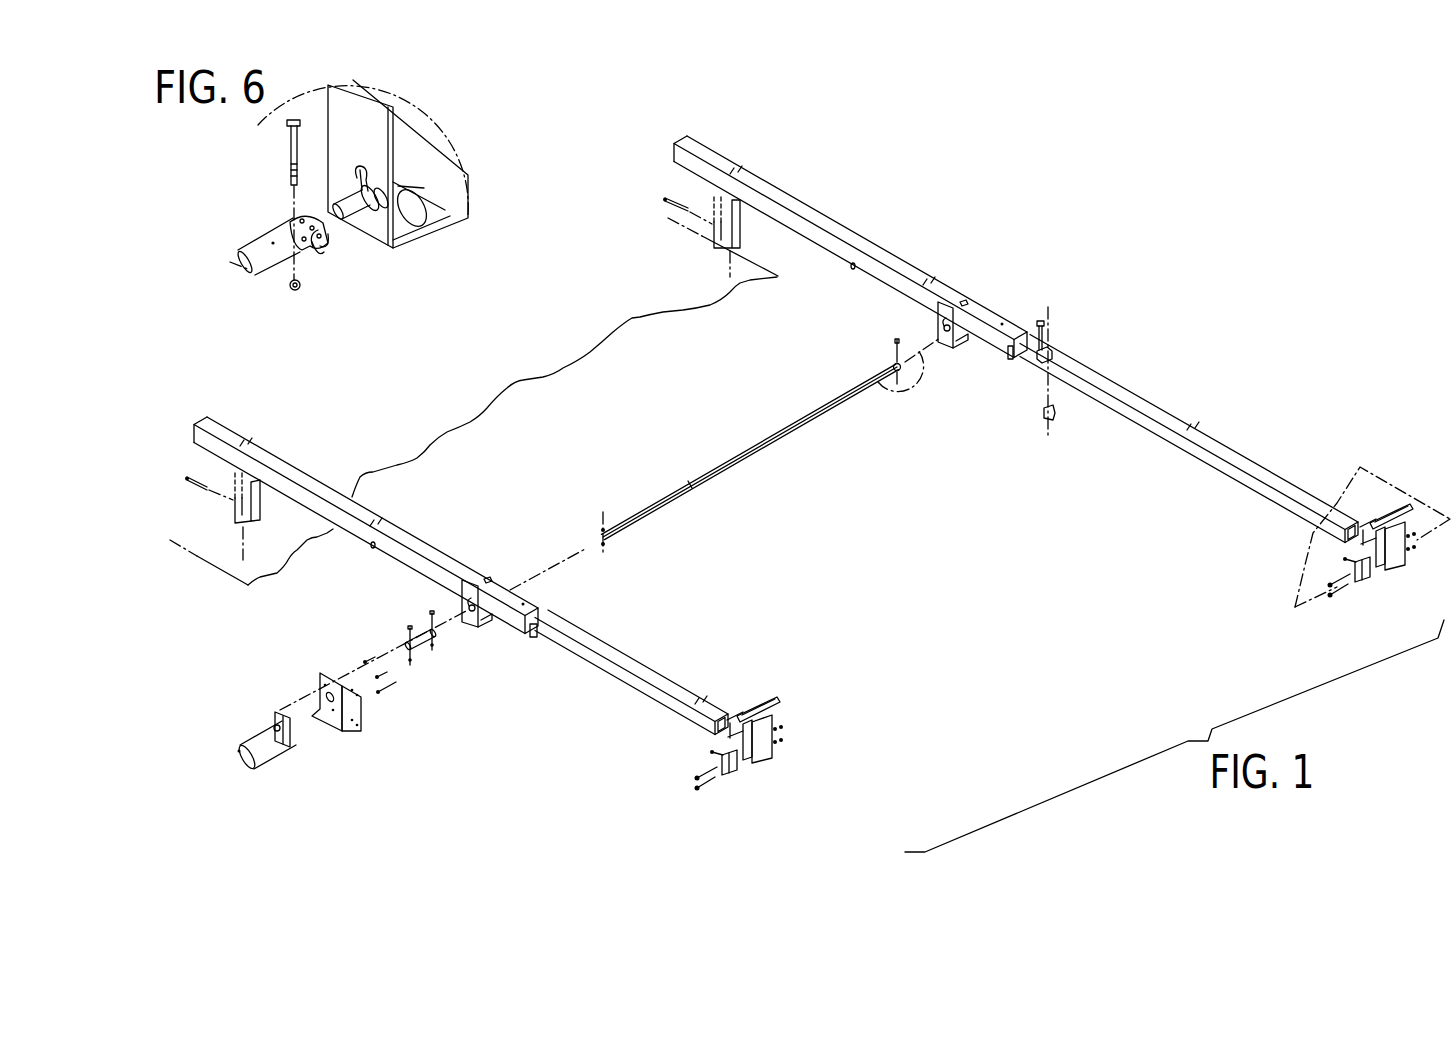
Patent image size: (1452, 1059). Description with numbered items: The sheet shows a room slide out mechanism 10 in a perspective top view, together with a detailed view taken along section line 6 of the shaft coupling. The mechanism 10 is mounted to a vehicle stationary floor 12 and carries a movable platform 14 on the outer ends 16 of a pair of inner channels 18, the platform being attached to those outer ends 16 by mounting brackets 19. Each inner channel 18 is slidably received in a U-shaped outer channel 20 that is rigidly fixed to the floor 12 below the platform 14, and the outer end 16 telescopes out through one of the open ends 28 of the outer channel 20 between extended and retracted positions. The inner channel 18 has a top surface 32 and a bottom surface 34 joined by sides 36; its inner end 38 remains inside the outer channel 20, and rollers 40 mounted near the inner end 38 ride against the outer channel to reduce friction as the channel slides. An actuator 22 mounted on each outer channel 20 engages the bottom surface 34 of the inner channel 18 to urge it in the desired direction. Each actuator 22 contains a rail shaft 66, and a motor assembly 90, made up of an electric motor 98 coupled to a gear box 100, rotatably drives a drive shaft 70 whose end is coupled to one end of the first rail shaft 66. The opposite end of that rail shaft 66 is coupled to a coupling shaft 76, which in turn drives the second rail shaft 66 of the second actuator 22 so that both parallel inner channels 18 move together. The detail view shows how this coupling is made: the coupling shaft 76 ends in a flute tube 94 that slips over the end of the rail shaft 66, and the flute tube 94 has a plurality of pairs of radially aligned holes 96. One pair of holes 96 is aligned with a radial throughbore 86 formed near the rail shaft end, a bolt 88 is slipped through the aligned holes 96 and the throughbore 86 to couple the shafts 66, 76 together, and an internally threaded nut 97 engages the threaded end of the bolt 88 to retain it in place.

In FIG. 1, the section line 6— 6 is at (878, 370).
In FIG. 1, the room slide out mechanism 10 is at (1083, 208).
In FIG. 1, the vehicle stationary floor 12 is at (632, 313).
In FIG. 1, the movable platform 14 is at (1405, 490).
In FIG. 1, the outer end 16 is at (1362, 522).
In FIG. 1, the inner channel 18 is at (1257, 460).
In FIG. 1, the mounting bracket 19 is at (1395, 567).
In FIG. 6, the outer channel 20 is at (452, 173).
In FIG. 1, the outer channel 20 is at (862, 233).
In FIG. 6, the actuator 22 is at (400, 268).
In FIG. 1, the actuator 22 is at (948, 352).
In FIG. 1, the open end 28 is at (672, 148).
In FIG. 1, the top surface 32 is at (1163, 412).
In FIG. 1, the bottom surface 34 is at (1190, 457).
In FIG. 1, the side 36 is at (1235, 478).
In FIG. 1, the inner end 38 is at (1028, 365).
In FIG. 1, the roller 40 is at (1047, 353).
In FIG. 6, the rail shaft 66 is at (360, 215).
In FIG. 1, the drive shaft 70 is at (417, 648).
In FIG. 6, the coupling shaft 76 is at (268, 278).
In FIG. 1, the coupling shaft 76 is at (797, 430).
In FIG. 6, the radial throughbore 86 is at (358, 170).
In FIG. 6, the bolt 88 is at (292, 147).
In FIG. 1, the motor assembly 90 is at (382, 723).
In FIG. 6, the flute tube 94 is at (289, 224).
In FIG. 6, the radially aligned holes 96 is at (318, 229).
In FIG. 6, the nut 97 is at (298, 290).
In FIG. 1, the hitch tube 98 is at (270, 753).
In FIG. 1, the gear box 100 is at (280, 712).